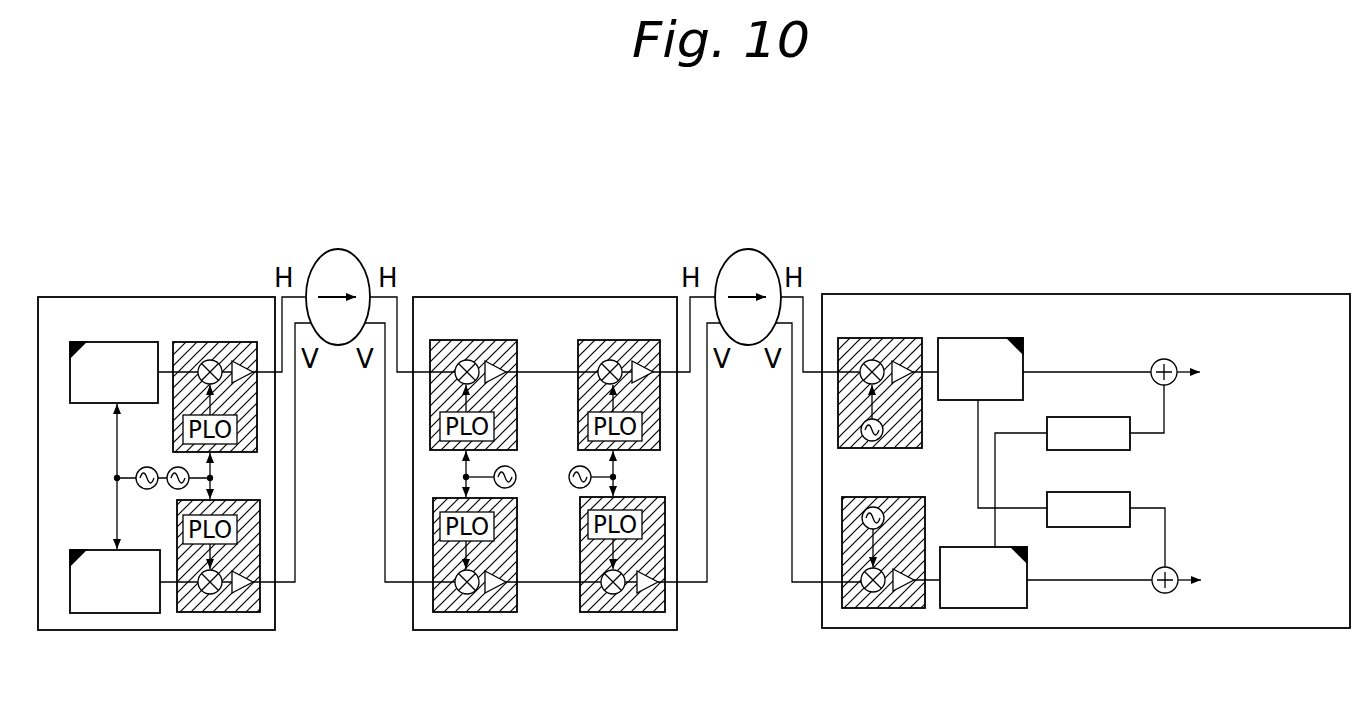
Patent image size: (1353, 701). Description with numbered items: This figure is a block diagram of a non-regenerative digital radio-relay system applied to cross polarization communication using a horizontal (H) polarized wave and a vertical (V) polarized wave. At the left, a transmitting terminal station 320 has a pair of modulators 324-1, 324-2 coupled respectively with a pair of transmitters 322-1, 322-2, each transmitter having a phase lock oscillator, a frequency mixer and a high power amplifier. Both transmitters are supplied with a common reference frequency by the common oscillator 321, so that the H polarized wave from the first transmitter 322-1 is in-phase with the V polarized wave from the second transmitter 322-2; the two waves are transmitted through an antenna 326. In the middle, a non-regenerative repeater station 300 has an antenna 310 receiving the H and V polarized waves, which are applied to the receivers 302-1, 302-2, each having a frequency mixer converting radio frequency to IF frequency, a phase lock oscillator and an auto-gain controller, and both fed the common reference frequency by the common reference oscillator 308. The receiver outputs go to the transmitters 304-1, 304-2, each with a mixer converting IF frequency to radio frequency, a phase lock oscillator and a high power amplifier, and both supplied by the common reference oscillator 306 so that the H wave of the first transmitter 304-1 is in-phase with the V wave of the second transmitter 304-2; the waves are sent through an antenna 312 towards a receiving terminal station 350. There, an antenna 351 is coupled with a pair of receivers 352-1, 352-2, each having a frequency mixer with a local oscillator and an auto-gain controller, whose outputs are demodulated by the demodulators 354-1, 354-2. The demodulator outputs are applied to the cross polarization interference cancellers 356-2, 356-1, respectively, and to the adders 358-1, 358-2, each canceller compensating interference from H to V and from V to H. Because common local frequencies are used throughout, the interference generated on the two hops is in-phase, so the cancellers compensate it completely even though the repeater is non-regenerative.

The transmitting terminal station 320 is at (200, 297).
The common oscillator 321 is at (168, 465).
The first transmitter 322-1 is at (260, 440).
The second transmitter 322-2 is at (262, 603).
The modulator 324-1 is at (114, 372).
The modulator 324-2 is at (115, 581).
The antenna 326 is at (317, 262).
The antenna 310 is at (352, 262).
The non-regenerative repeater station 300 is at (458, 297).
The receiver 302-1 is at (430, 405).
The receiver 302-2 is at (433, 552).
The transmitter 304-1 is at (660, 398).
The transmitter 304-2 is at (665, 540).
The common reference oscillator 306 is at (575, 468).
The common reference oscillator 308 is at (515, 482).
The antenna 312 is at (728, 258).
The antenna 351 is at (770, 258).
The receiving terminal station 350 is at (1152, 294).
The receiver 352-1 is at (872, 338).
The receiver 352-2 is at (856, 497).
The demodulator 354-1 is at (980, 369).
The demodulator 354-2 is at (983, 577).
The cross polarization interference canceller 356-1 is at (1105, 417).
The cross polarization interference canceller 356-2 is at (1106, 529).
The adder 358-1 is at (1164, 359).
The adder 358-2 is at (1152, 590).